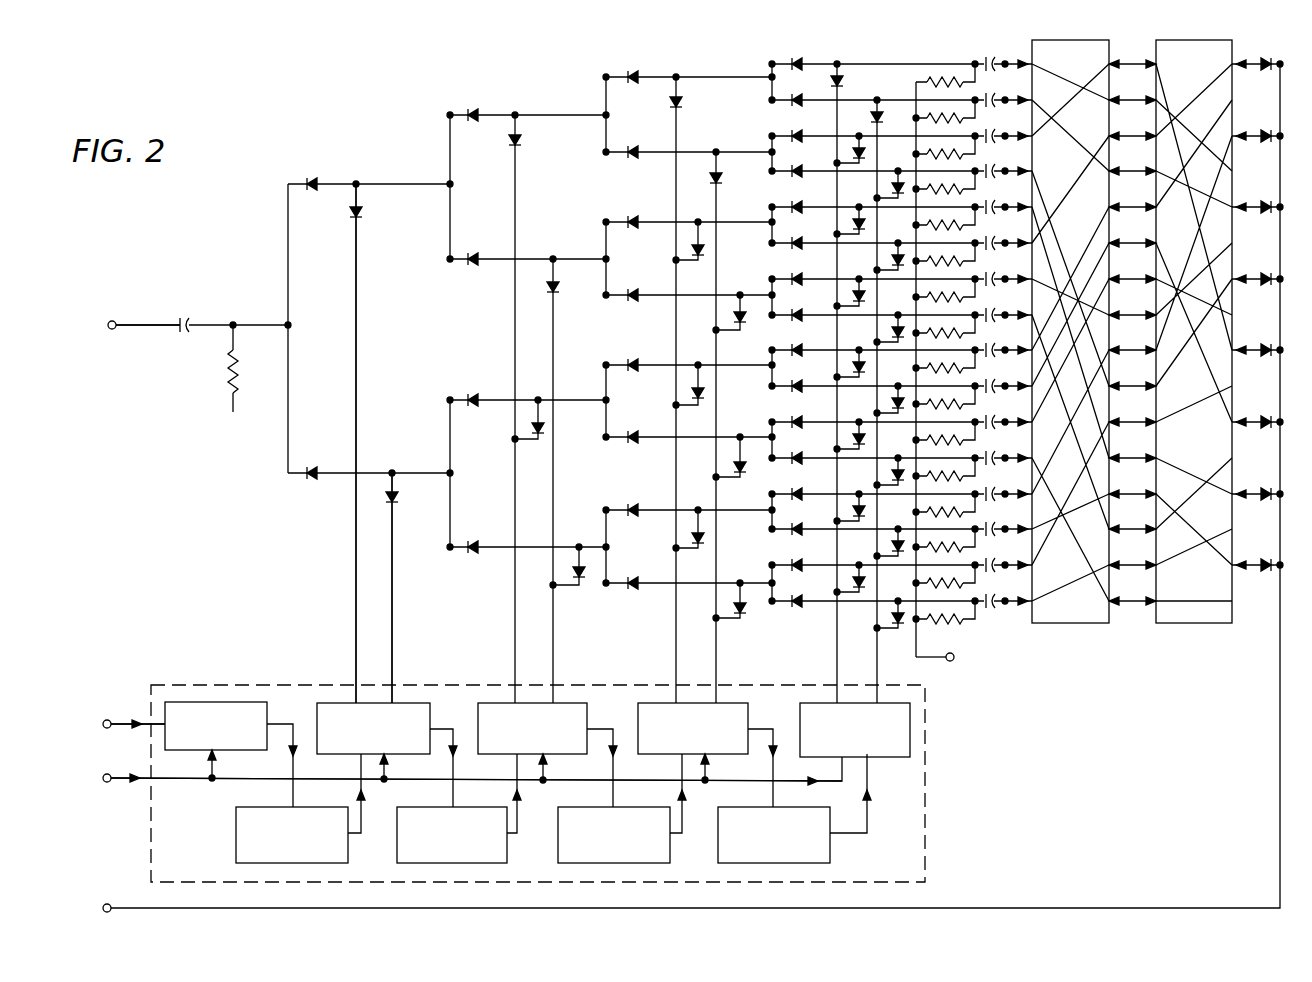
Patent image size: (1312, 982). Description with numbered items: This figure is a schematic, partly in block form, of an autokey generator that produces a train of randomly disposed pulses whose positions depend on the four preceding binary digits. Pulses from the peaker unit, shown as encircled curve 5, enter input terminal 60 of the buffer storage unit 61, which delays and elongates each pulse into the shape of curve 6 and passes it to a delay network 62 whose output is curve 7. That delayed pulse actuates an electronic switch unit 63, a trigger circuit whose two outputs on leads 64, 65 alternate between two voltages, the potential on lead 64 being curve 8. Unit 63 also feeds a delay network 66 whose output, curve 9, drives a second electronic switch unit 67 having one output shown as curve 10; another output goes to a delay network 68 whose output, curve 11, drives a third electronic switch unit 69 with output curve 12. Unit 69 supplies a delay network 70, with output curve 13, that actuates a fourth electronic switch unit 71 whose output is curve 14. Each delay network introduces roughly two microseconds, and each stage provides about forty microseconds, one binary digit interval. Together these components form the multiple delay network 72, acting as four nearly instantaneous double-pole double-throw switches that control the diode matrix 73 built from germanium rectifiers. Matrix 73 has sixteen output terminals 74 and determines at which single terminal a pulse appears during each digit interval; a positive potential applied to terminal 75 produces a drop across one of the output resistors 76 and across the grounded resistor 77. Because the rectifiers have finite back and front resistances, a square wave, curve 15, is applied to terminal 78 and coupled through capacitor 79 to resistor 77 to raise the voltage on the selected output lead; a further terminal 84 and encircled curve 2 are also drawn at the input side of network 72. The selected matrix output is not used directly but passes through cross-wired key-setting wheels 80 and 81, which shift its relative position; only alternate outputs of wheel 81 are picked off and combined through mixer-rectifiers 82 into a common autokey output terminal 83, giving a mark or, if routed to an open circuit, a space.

The input signal line waveform reference 2 is at (476, 764).
The curve 5 is at (138, 710).
The curve 6 is at (282, 753).
The curve 7 is at (361, 807).
The curve 8 is at (358, 443).
The curve 9 is at (481, 795).
The curve 10 is at (519, 409).
The curve 11 is at (642, 795).
The curve 12 is at (680, 390).
The curve 13 is at (809, 795).
The curve 14 is at (842, 383).
The curve 15 is at (148, 311).
The input terminal 60 is at (107, 720).
The buffer storage unit 61 is at (238, 751).
The delay network 62 is at (236, 817).
The electronic switch unit 63 is at (430, 712).
The lead 64 is at (356, 584).
The lead 65 is at (392, 588).
The delay network 66 is at (432, 807).
The second electronic switch unit 67 is at (587, 712).
The delay network 68 is at (601, 807).
The third electronic switch unit 69 is at (748, 712).
The delay network 70 is at (741, 807).
The fourth electronic switch unit 71 is at (882, 757).
The multiple delay network 72 is at (305, 683).
The diode matrix 73 is at (440, 322).
The output terminals 74 is at (1010, 50).
The terminal 75 is at (951, 661).
The output resistors 76 is at (953, 52).
The resistor 77 is at (240, 372).
The terminal 78 is at (120, 331).
The capacitor 79 is at (190, 320).
The cross-wired key-setting wheel 80 is at (1050, 623).
The cross-wired key-setting wheel 81 is at (1170, 623).
The mixer-rectifiers 82 is at (1270, 52).
The autokey output terminal 83 is at (112, 904).
The clock input terminal 84 is at (108, 782).